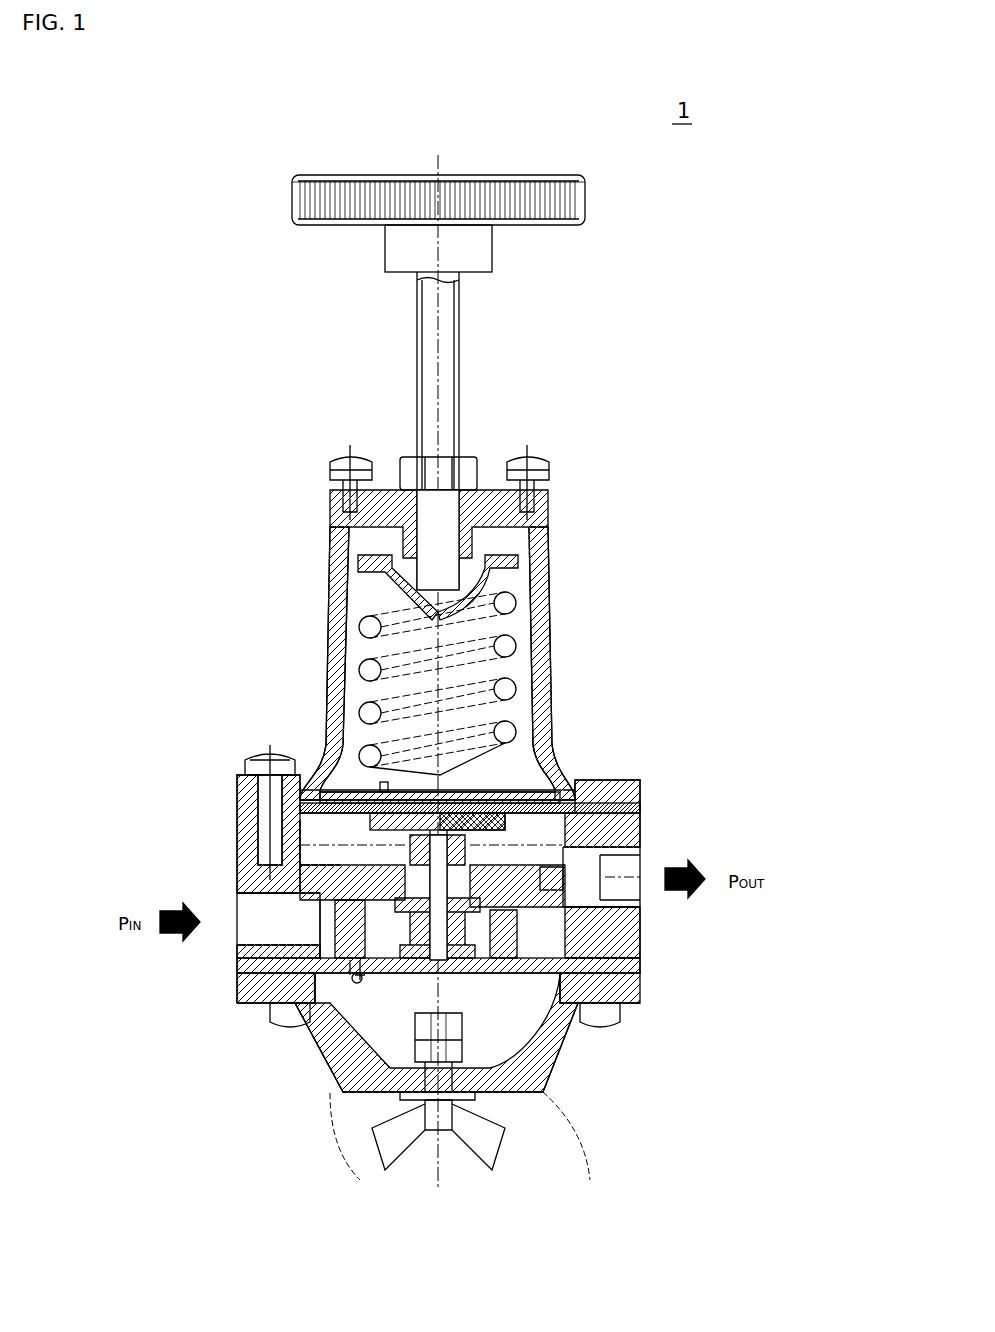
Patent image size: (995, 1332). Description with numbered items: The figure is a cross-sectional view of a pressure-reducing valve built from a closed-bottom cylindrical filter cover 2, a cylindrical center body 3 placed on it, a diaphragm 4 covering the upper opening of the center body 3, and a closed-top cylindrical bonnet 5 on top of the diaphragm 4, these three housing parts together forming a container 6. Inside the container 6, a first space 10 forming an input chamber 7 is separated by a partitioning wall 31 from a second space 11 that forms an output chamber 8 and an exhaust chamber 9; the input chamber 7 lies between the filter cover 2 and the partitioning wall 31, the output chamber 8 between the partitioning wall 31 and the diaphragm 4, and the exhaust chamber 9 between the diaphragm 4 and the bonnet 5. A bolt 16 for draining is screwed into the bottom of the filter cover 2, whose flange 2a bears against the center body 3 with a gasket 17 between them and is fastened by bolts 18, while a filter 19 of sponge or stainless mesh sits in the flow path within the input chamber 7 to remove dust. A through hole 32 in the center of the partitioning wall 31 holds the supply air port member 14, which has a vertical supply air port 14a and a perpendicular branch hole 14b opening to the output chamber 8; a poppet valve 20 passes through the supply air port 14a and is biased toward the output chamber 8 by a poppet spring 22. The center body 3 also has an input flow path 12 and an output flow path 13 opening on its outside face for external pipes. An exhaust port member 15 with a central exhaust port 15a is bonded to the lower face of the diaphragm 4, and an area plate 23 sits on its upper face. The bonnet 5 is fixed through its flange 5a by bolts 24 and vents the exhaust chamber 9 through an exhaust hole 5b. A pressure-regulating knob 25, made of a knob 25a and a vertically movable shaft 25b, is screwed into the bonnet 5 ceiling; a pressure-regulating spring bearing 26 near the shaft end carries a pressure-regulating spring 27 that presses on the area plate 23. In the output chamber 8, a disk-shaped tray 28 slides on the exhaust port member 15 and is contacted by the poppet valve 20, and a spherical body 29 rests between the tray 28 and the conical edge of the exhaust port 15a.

The filter cover 2 is at (535, 1092).
The flange 2a is at (292, 1000).
The center body 3 is at (605, 975).
The diaphragm 4 is at (600, 780).
The bonnet 5 is at (332, 540).
The flange 5a is at (240, 790).
The exhaust hole 5b is at (540, 740).
The container 6 is at (548, 530).
The input chamber 7 is at (592, 1055).
The output chamber 8 is at (330, 848).
The exhaust chamber 9 is at (358, 600).
The first space 10 is at (358, 1045).
The second space 11 is at (630, 870).
The input flow path 12 is at (280, 940).
The output flow path 13 is at (608, 888).
The supply air port member 14 is at (350, 886).
The supply air port 14a is at (330, 852).
The branch hole 14b is at (540, 850).
The exhaust port member 15 is at (462, 805).
The exhaust port 15a is at (362, 775).
The bolt 16 is at (402, 1150).
The gasket 17 is at (355, 968).
The bolts 18 is at (275, 1030).
The filter 19 is at (420, 1030).
The poppet valve 20 is at (262, 778).
The poppet spring 22 is at (268, 1010).
The area plate 23 is at (505, 822).
The bolts 24 is at (272, 768).
The pressure-regulating knob 25 is at (585, 190).
The knob 25a is at (400, 178).
The shaft 25b is at (441, 348).
The pressure-regulating spring bearing 26 is at (398, 510).
The pressure-regulating spring 27 is at (498, 604).
The tray 28 is at (548, 828).
The spherical body 29 is at (455, 798).
The partitioning wall 31 is at (548, 945).
The through hole 32 is at (325, 912).